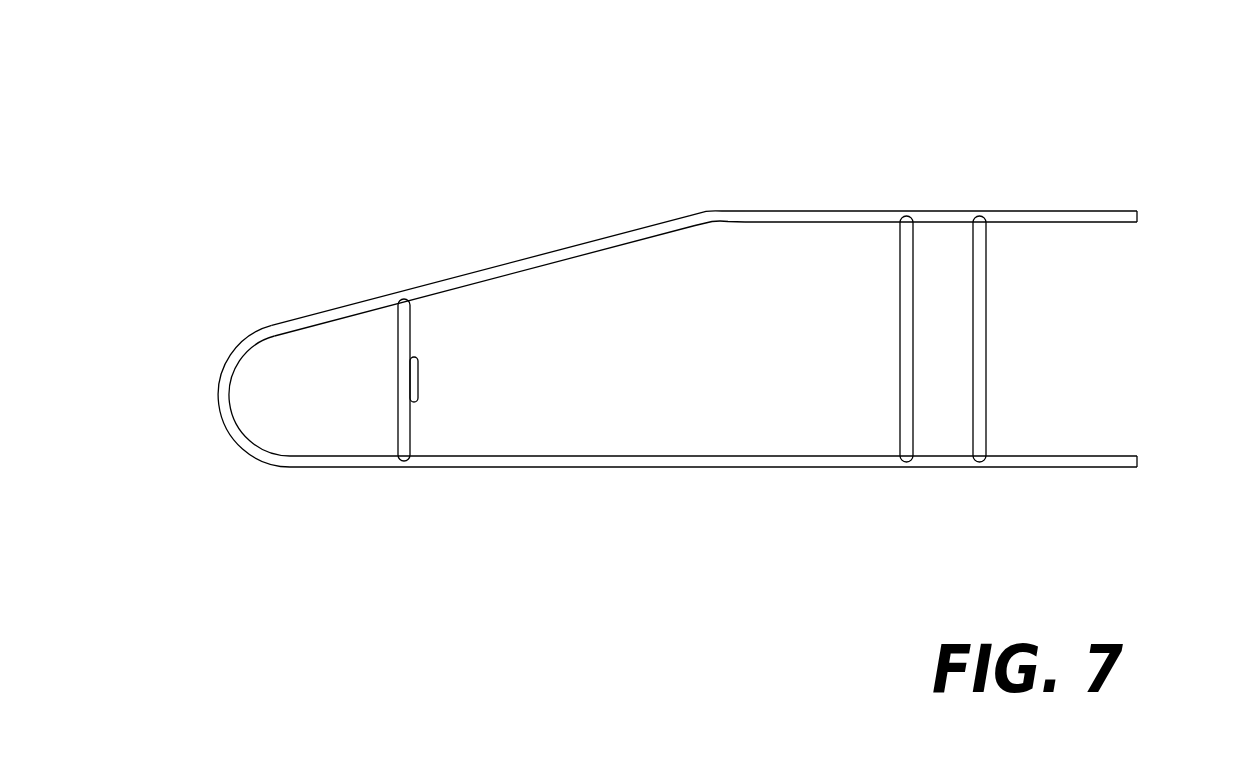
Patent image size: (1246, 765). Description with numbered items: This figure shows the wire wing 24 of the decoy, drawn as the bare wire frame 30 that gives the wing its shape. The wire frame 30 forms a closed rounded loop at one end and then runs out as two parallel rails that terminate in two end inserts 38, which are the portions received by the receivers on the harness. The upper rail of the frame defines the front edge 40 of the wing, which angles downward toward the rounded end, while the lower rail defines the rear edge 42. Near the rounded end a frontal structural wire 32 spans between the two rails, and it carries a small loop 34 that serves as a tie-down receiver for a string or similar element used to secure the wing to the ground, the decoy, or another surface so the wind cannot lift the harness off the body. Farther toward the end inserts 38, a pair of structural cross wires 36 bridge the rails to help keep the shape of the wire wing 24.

The wire wing 24 is at (380, 106).
The wire frame 30 is at (218, 390).
The frontal structural wire 32 is at (410, 335).
The loop 34 is at (418, 372).
The structural cross wires 36 is at (973, 258).
The end inserts 38 is at (1137, 215).
The front edge 40 is at (711, 209).
The rear edge 42 is at (677, 476).